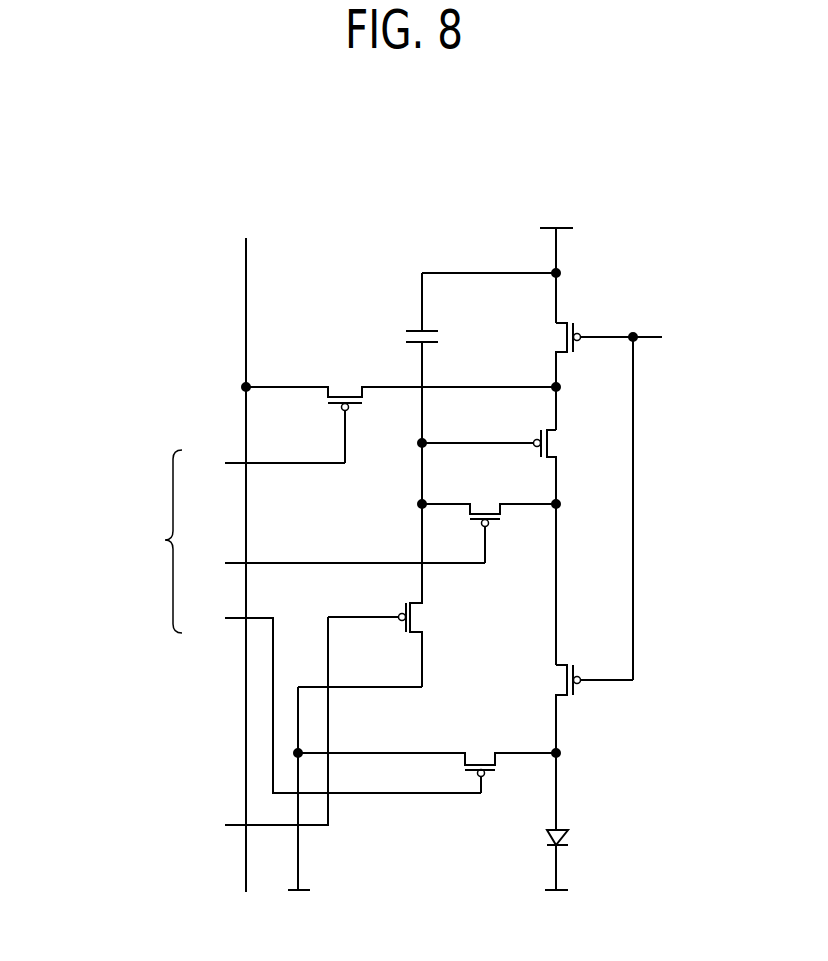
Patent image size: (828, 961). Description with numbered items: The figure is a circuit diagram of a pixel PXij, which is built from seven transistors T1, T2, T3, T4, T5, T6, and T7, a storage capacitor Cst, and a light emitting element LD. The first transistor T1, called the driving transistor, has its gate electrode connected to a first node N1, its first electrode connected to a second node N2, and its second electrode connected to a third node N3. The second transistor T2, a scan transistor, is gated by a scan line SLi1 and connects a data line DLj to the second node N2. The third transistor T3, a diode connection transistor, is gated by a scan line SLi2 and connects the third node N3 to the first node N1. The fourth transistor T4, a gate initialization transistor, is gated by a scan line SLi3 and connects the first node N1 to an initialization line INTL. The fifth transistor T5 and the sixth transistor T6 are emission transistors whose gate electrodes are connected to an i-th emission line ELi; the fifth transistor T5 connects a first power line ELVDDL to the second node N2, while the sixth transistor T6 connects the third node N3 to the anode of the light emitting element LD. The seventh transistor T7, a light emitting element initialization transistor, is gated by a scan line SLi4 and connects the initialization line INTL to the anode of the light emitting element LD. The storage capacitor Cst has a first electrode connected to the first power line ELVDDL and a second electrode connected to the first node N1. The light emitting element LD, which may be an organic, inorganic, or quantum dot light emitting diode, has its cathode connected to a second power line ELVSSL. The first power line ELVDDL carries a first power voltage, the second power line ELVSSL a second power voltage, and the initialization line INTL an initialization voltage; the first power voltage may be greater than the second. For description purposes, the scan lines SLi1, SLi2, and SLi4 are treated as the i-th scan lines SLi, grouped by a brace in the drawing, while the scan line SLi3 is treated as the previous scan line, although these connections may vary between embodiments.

The pixel PXij is at (616, 199).
The first power line ELVDDL is at (550, 259).
The second power line ELVSSL is at (553, 909).
The data line DLj is at (247, 550).
The i-th emission line ELi is at (621, 490).
The storage capacitor Cst is at (481, 358).
The first transistor T1 is at (556, 466).
The second transistor T2 is at (334, 412).
The third transistor T3 is at (487, 518).
The fourth transistor T4 is at (387, 595).
The fifth transistor T5 is at (556, 355).
The sixth transistor T6 is at (554, 747).
The seventh transistor T7 is at (429, 759).
The first node N1 is at (462, 466).
The second node N2 is at (505, 401).
The third node N3 is at (570, 576).
The i-th scan lines SLi is at (157, 541).
The scan line SLi1 is at (264, 464).
The scan line SLi2 is at (334, 564).
The scan line SLi3 is at (199, 731).
The scan line SLi4 is at (332, 698).
The initialization line INTL is at (348, 808).
The light emitting element LD is at (571, 857).